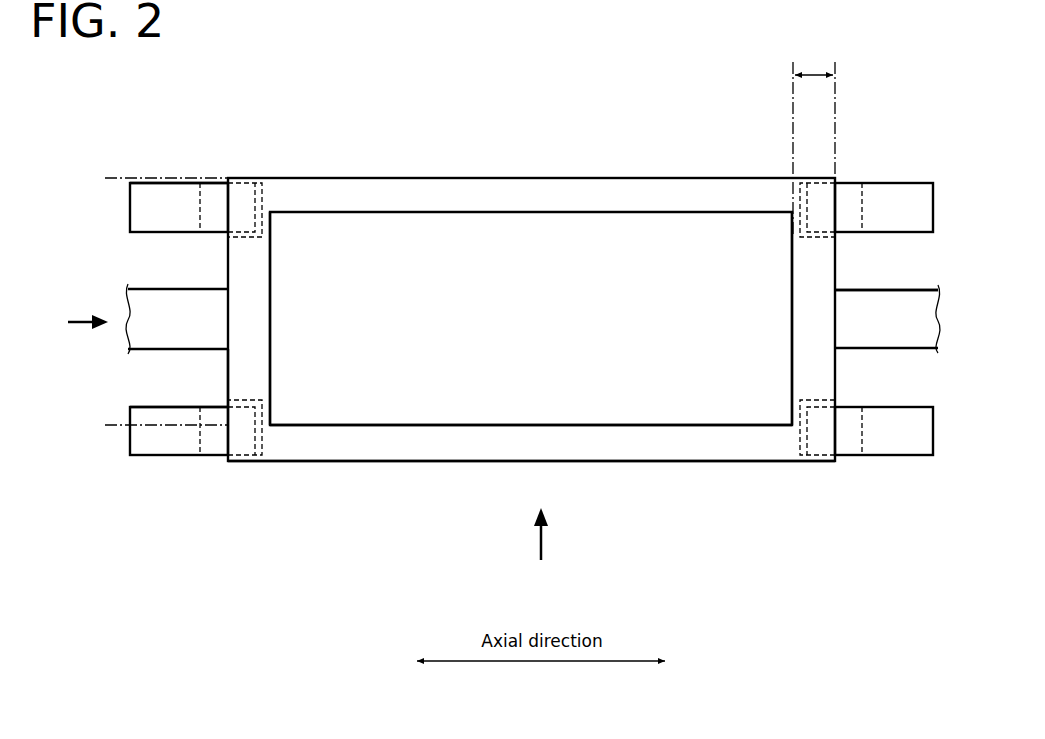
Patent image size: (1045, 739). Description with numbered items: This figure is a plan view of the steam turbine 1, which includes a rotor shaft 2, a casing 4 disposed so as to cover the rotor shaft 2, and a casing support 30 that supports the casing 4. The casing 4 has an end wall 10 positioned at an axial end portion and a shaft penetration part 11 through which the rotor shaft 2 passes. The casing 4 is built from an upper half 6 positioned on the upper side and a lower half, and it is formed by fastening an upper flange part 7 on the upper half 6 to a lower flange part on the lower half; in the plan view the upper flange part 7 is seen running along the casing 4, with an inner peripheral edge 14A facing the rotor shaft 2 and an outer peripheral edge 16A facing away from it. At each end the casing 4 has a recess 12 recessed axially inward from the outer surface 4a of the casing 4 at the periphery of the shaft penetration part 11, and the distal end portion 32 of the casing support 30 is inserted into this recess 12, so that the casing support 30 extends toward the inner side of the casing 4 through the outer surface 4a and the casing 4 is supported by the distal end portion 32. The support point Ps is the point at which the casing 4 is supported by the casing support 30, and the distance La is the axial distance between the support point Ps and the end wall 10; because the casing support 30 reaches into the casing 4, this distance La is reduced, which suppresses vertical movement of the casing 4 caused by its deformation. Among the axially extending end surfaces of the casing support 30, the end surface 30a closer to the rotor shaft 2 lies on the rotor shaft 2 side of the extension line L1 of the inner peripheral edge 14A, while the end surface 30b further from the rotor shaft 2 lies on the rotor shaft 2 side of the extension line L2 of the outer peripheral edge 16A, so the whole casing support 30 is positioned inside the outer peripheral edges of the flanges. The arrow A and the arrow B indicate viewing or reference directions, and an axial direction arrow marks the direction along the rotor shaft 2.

The steam turbine 1 is at (876, 64).
The rotor shaft 2 is at (908, 292).
The casing 4 is at (640, 240).
The outer surface 4a is at (228, 262).
The upper half 6 is at (640, 240).
The upper flange part 7 is at (535, 190).
The end wall 10 is at (270, 362).
The shaft penetration part 11 is at (218, 353).
The recess 12 is at (245, 177).
The inner peripheral edge 14A is at (410, 425).
The outer peripheral edge 16A is at (478, 462).
The casing support 30 is at (172, 195).
The end surface 30a is at (133, 407).
The end surface 30b is at (147, 183).
The distal end portion 32 is at (217, 180).
The support point Ps is at (228, 203).
The distance La is at (814, 139).
The extension line L1 is at (115, 428).
The extension line L2 is at (125, 178).
The direction A is at (540, 549).
The direction B is at (78, 320).